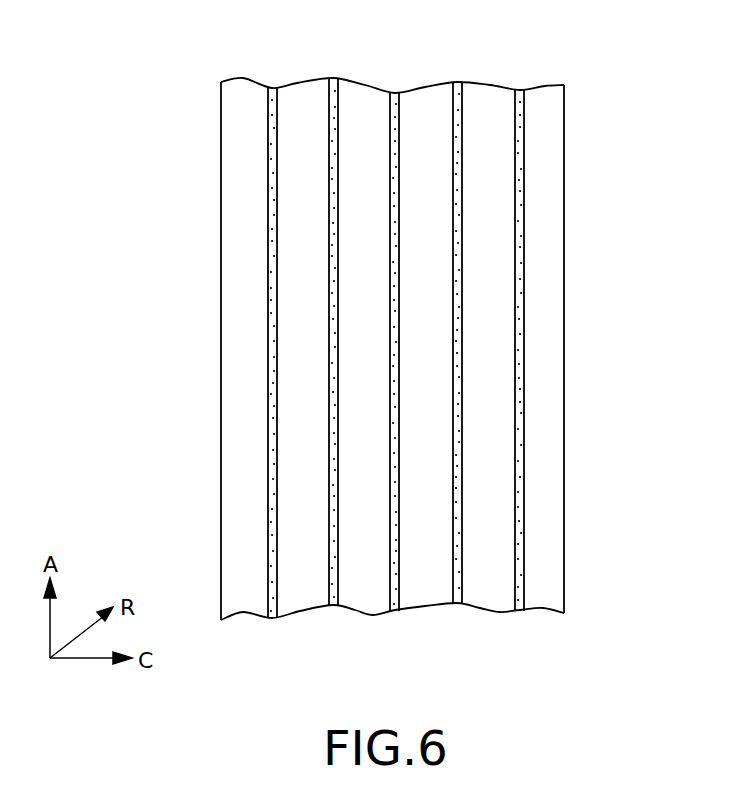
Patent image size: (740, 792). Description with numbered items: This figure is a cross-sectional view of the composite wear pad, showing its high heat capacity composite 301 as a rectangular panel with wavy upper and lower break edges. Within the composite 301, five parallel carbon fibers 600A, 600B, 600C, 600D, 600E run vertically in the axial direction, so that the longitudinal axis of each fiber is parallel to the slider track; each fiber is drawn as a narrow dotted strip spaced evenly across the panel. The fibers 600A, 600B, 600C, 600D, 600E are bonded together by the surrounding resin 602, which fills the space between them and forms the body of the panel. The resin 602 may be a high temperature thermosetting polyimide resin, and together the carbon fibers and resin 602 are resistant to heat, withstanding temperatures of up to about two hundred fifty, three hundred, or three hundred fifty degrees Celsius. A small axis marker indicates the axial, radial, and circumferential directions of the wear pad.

The high heat capacity composite 301 is at (221, 338).
The resin 602 is at (542, 170).
The carbon fiber 600A is at (268, 106).
The carbon fiber 600B is at (329, 106).
The carbon fiber 600C is at (389, 107).
The carbon fiber 600D is at (452, 107).
The carbon fiber 600E is at (514, 107).